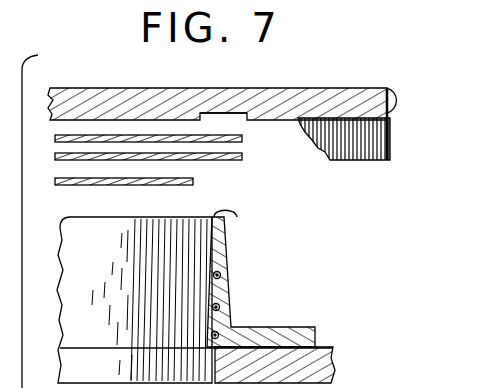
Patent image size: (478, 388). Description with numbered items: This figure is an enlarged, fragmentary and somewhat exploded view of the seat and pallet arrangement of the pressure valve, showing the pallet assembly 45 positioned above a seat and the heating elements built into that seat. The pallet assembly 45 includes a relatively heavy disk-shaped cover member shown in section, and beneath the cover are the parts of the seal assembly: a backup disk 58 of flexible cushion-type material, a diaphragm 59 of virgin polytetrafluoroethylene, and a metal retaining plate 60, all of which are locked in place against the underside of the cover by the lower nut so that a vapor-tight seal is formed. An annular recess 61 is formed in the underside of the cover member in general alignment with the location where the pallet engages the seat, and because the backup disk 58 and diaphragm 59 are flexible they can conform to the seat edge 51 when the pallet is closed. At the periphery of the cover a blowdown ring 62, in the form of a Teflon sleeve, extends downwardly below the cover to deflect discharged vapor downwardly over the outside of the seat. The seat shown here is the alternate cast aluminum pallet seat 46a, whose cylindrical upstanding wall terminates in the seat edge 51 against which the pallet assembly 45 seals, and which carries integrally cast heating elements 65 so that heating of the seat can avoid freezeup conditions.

The pallet assembly 45 is at (293, 80).
The annular recess 61 is at (224, 112).
The blowdown ring 62 is at (392, 138).
The backup disk 58 is at (242, 138).
The diaphragm 59 is at (242, 157).
The retaining plate 60 is at (193, 181).
The seat edge 51 is at (238, 216).
The pallet seat 46a is at (243, 247).
The heating elements 65 is at (225, 276).